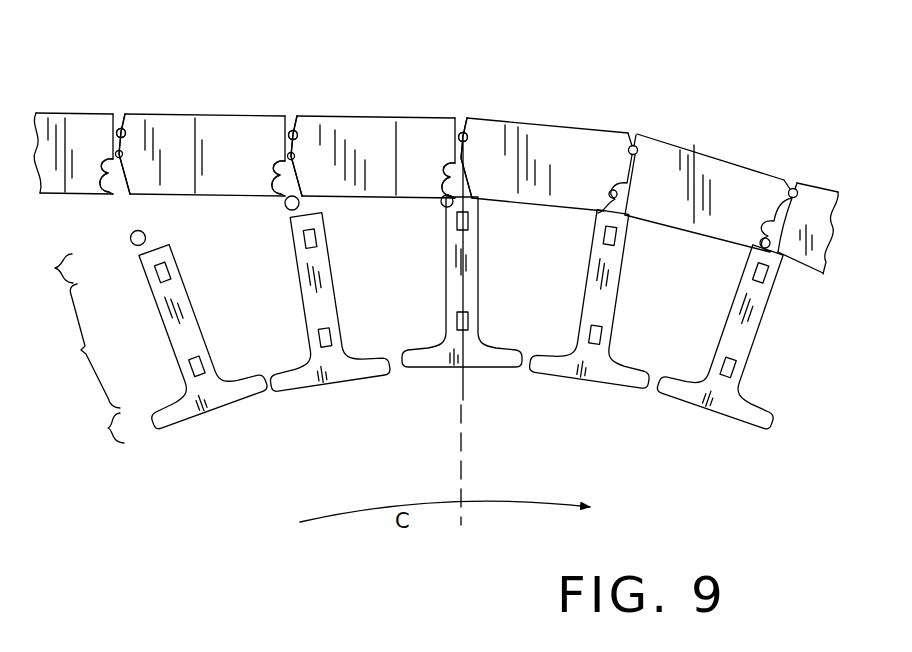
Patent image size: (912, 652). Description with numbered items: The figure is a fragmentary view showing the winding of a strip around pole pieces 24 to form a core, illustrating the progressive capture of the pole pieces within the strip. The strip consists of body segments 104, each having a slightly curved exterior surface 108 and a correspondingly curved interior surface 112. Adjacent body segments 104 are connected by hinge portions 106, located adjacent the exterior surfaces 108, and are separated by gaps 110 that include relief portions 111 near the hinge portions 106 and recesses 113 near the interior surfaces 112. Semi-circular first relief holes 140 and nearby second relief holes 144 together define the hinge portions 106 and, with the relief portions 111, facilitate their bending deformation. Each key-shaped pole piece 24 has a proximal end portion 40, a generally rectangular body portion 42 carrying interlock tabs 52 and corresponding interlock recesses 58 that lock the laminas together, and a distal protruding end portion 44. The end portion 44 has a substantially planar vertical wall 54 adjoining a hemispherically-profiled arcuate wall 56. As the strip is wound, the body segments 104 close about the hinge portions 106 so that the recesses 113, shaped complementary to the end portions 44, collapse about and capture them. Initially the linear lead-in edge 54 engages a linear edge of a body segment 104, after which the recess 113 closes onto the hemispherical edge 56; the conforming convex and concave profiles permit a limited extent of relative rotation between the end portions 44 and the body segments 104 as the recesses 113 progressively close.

The pole piece 24 is at (457, 317).
The proximal or pole piece end portion 40 is at (100, 431).
The body portion 42 is at (83, 346).
The distal protruding end portion 44 is at (812, 290).
The interlock tabs 52 is at (461, 295).
The substantially planar vertical wall 54 is at (146, 234).
The hemispherically-profiled arcuate vertical wall 56 is at (135, 251).
The interlock recess 58 is at (172, 274).
The body segments 104 is at (436, 153).
The hinge portions 106 is at (117, 129).
The exterior surface 108 is at (207, 113).
The gaps 110 is at (120, 203).
The relief portions 111 is at (124, 157).
The interior surface 112 is at (230, 197).
The recesses 113 is at (101, 187).
The first relief holes 140 is at (121, 120).
The second relief holes 144 is at (116, 150).